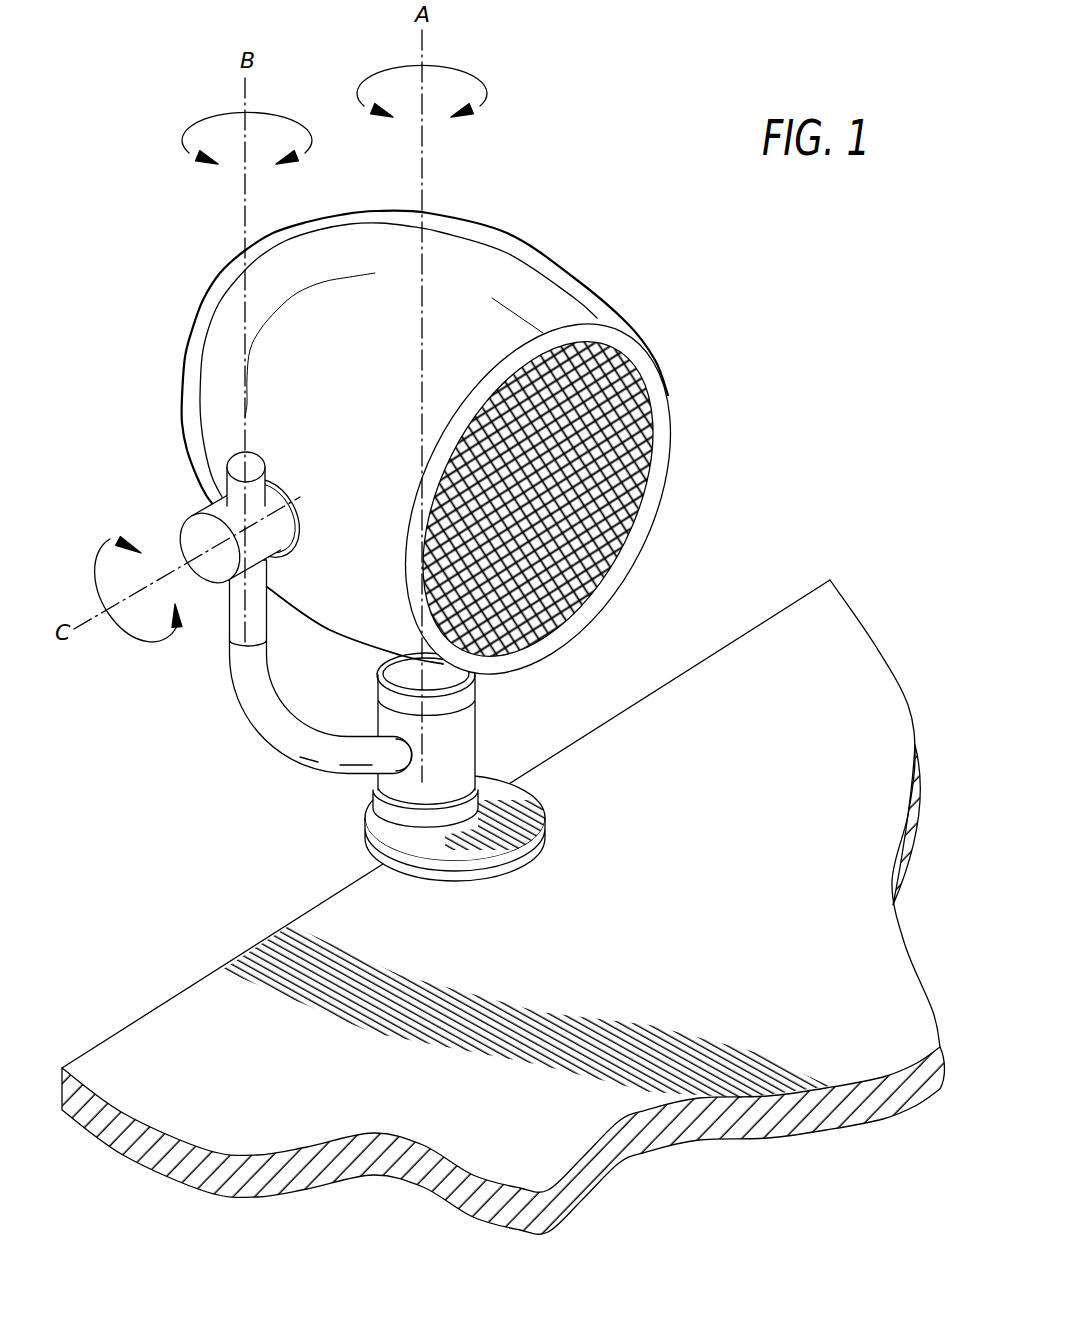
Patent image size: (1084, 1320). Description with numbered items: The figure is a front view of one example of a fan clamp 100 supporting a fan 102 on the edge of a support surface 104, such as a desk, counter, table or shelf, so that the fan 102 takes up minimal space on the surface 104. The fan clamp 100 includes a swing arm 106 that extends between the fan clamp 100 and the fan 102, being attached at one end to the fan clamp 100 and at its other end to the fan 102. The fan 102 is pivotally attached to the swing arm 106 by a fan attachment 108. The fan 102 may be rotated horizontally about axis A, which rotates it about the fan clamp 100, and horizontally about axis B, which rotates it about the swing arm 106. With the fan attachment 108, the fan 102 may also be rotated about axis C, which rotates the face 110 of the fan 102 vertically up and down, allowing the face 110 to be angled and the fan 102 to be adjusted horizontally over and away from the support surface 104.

The fan clamp 100 is at (352, 814).
The fan 102 is at (482, 256).
The support surface 104 is at (733, 789).
The swing arm 106 is at (278, 756).
The fan attachment 108 is at (186, 513).
The face 110 is at (610, 470).